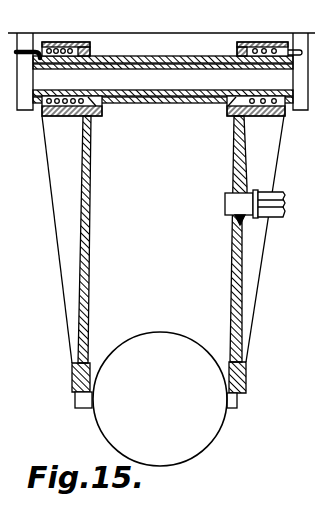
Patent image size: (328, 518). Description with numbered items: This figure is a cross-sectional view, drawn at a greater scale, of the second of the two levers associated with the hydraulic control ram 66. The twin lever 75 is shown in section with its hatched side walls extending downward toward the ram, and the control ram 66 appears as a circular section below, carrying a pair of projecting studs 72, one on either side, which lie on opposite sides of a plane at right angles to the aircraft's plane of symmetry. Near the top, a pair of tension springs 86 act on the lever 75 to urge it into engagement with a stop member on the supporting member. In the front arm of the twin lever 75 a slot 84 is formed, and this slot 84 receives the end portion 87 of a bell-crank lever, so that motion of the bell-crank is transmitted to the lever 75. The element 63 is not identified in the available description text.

The frame 63 is at (161, 16).
The tension springs 86 is at (61, 51).
The twin lever 75 is at (89, 220).
The slot 84 is at (232, 197).
The end portion 87 is at (240, 208).
The projecting studs 72 is at (93, 392).
The control ram 66 is at (160, 399).